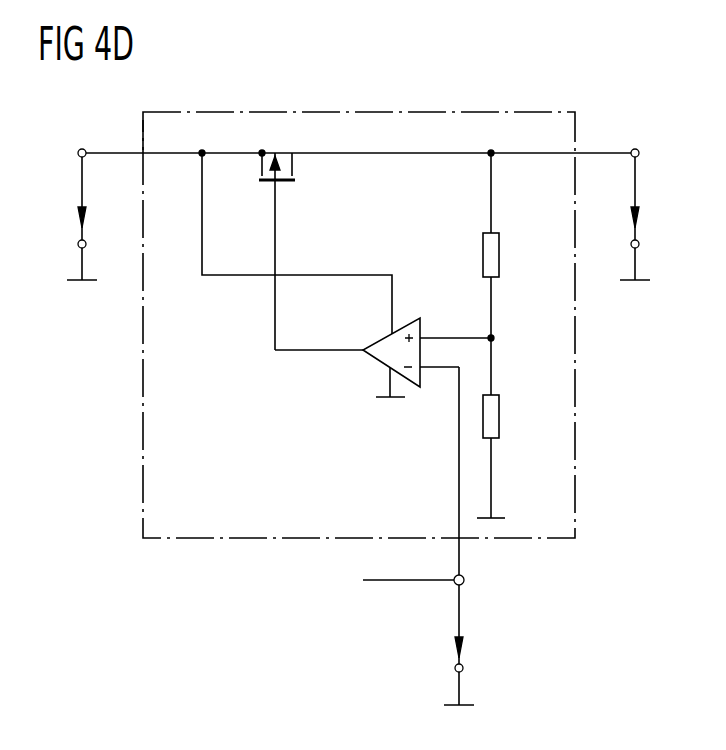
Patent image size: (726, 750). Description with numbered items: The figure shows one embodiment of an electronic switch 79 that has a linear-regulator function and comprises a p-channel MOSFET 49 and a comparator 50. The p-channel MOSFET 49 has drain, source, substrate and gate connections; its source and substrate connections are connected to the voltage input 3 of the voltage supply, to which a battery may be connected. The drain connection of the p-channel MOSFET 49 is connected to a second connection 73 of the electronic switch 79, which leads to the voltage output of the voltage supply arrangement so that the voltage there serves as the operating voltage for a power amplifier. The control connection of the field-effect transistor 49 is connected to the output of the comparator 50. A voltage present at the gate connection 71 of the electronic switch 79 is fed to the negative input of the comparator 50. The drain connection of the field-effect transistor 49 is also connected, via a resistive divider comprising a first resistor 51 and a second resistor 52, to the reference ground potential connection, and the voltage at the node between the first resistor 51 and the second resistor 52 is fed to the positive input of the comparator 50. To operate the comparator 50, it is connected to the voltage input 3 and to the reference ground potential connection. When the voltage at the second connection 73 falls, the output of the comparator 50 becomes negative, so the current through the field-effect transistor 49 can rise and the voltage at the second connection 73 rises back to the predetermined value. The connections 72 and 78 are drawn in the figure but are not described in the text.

The voltage input 3 is at (84, 147).
The p-channel MOSFET 49 is at (286, 188).
The comparator 50 is at (378, 336).
The first resistor 51 is at (500, 256).
The second resistor 52 is at (500, 414).
The gate connection 71 is at (466, 580).
The input of voltage regulator 72 is at (142, 151).
The second connection 73 is at (580, 148).
The control line 78 is at (412, 584).
The electronic switch 79 is at (385, 108).